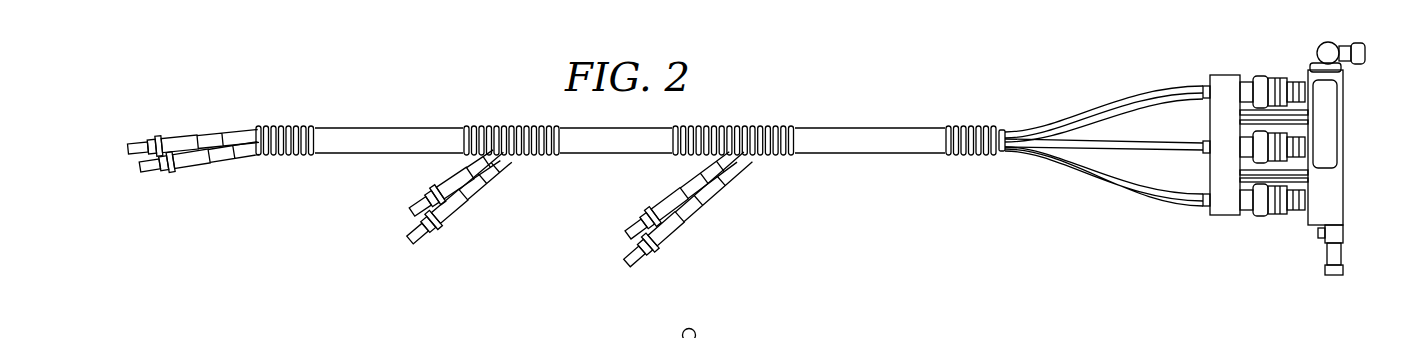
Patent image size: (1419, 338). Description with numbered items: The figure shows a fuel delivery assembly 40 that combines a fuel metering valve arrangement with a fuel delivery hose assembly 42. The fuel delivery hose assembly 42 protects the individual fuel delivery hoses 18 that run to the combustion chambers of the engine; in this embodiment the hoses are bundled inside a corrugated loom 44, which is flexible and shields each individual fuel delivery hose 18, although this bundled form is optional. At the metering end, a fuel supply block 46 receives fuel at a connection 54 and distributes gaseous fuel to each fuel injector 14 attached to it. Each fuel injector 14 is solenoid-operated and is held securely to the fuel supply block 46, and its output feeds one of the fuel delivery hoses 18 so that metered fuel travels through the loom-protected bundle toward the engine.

The fuel injector 14 is at (1271, 218).
The fuel delivery hose 18 is at (213, 138).
The fuel delivery assembly 40 is at (1013, 82).
The fuel delivery hose assembly 42 is at (798, 112).
The corrugated loom 44 is at (886, 153).
The fuel supply block 46 is at (1339, 196).
The connection 54 is at (1316, 55).